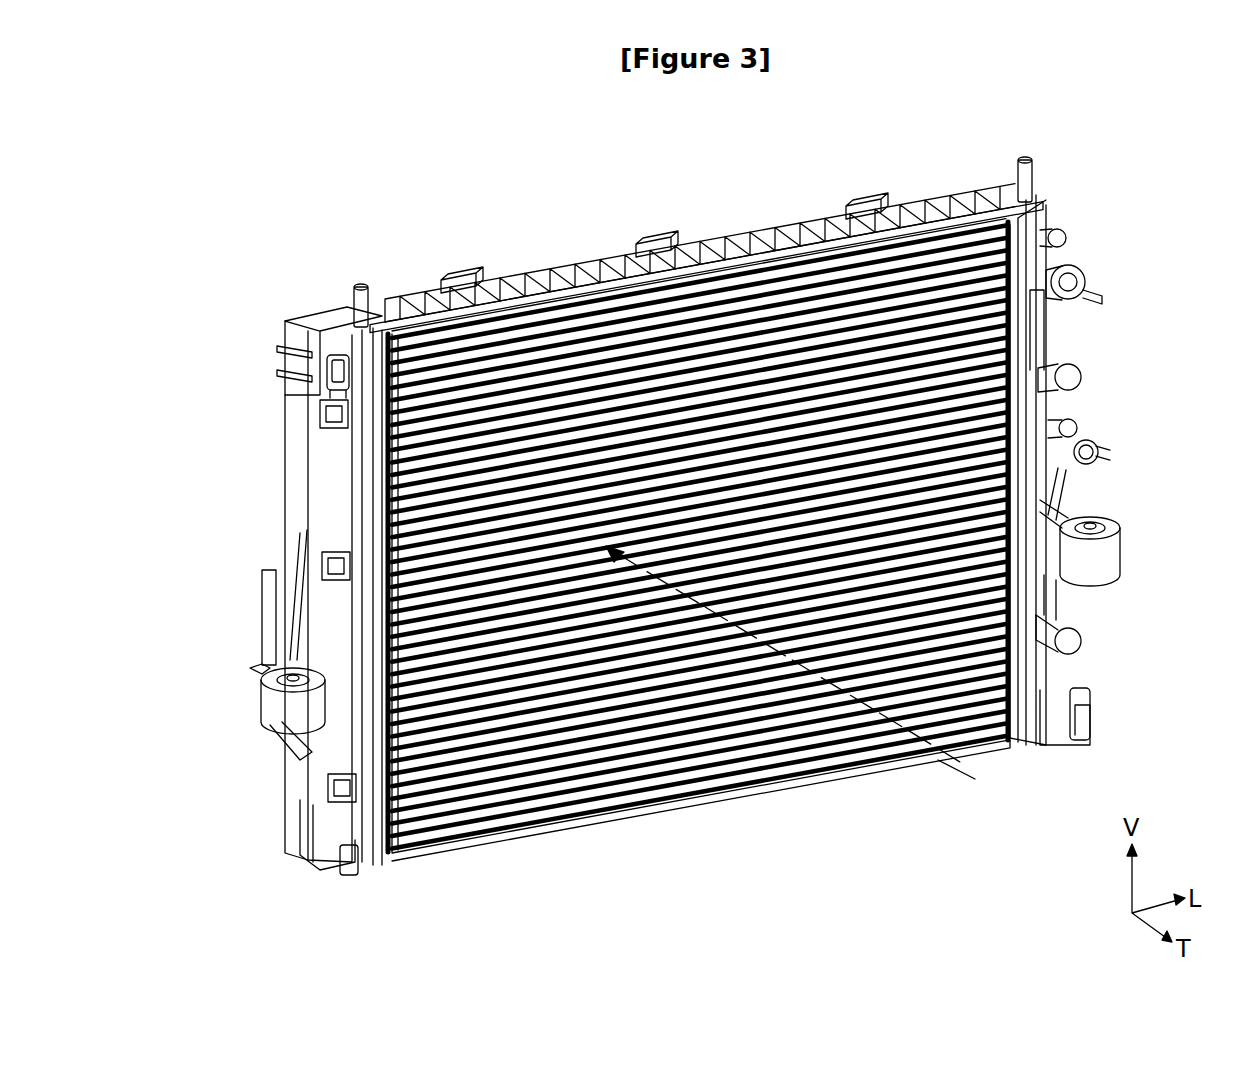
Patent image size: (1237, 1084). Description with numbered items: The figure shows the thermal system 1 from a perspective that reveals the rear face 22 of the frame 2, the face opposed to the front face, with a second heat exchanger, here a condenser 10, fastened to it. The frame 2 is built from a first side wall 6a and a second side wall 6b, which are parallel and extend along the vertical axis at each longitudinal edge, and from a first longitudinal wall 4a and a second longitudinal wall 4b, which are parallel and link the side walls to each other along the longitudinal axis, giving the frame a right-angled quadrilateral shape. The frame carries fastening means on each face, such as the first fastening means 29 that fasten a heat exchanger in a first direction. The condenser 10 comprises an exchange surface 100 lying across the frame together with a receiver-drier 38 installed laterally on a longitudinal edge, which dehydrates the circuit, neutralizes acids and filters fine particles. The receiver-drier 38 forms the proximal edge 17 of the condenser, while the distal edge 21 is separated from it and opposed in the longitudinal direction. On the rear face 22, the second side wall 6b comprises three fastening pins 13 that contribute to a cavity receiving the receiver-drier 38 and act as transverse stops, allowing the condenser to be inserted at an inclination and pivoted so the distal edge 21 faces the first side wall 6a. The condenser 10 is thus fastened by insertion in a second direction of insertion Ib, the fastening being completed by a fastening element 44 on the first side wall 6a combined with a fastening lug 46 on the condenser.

The thermal system 1 is at (260, 268).
The frame 2 is at (698, 228).
The first longitudinal wall 4a is at (572, 280).
The second longitudinal wall 4b is at (690, 804).
The first side wall 6a is at (1100, 486).
The second side wall 6b is at (290, 488).
The condenser 10 is at (760, 312).
The fastening pins 13 is at (322, 412).
The proximal edge 17 is at (265, 676).
The distal edge 21 is at (1082, 590).
The rear face 22 is at (392, 786).
The first fastening means 29 is at (1078, 436).
The receiver-drier 38 is at (338, 835).
The fastening element 44 is at (1070, 410).
The fastening lug 46 is at (1062, 372).
The exchange surface 100 is at (776, 718).
The second direction of insertion Ib is at (935, 770).